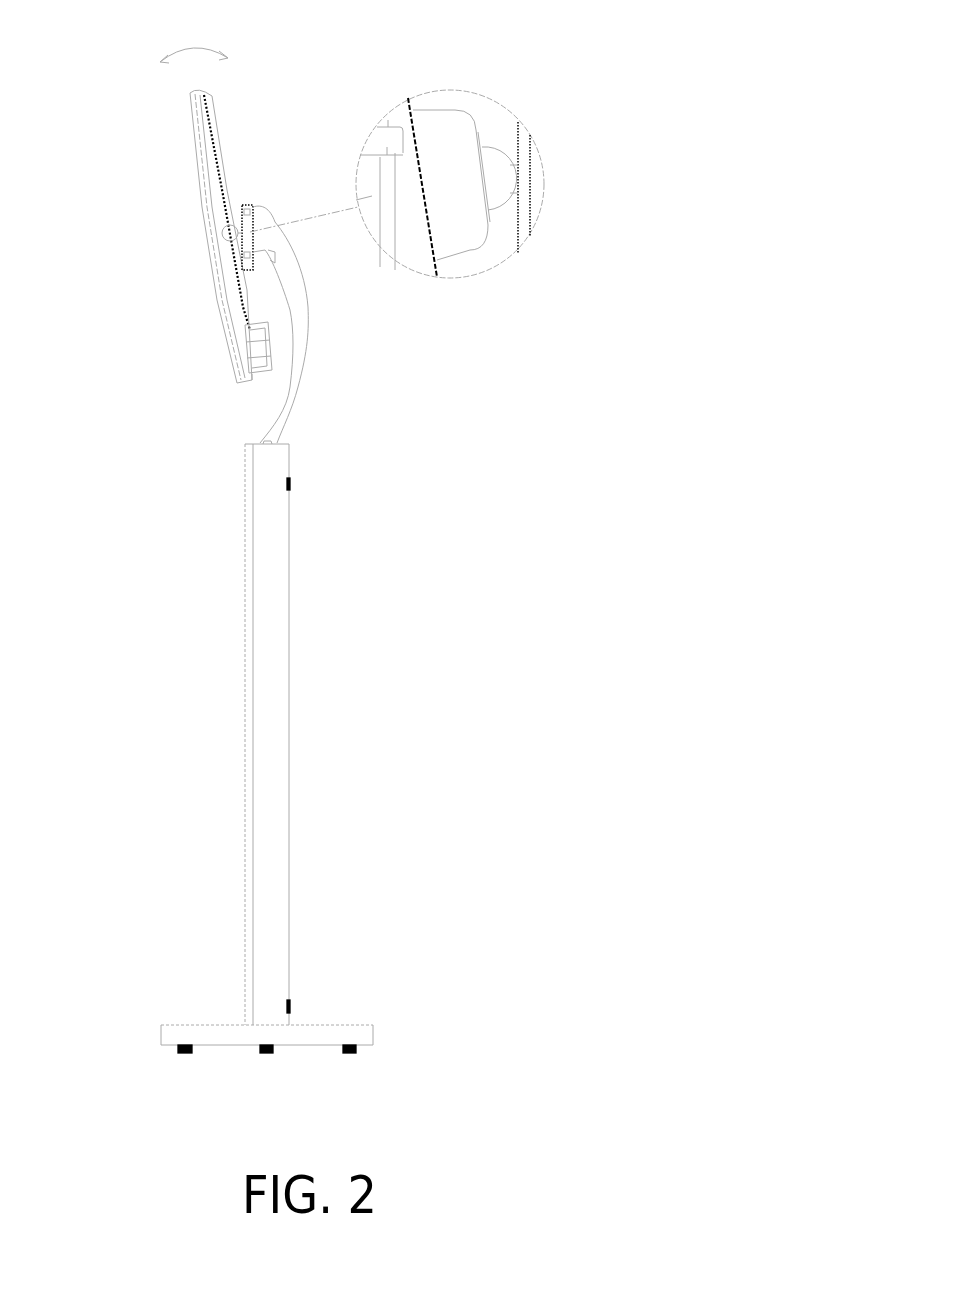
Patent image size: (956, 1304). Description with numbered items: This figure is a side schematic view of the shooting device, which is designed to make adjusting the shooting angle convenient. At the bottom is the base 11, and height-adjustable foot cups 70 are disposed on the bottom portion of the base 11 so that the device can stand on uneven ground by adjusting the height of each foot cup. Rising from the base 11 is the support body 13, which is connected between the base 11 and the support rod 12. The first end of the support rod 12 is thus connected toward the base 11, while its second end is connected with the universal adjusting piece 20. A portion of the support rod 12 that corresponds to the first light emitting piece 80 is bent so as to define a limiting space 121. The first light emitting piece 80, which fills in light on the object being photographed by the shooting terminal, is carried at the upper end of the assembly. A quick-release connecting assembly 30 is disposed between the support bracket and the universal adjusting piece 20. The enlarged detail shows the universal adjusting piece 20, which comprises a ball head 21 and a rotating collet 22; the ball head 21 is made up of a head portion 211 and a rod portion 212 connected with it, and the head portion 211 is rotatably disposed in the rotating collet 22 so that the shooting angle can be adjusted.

The base 11 is at (323, 1030).
The support rod 12 is at (303, 357).
The support body 13 is at (280, 712).
The limiting space 121 is at (283, 317).
The universal adjusting piece 20 is at (571, 147).
The ball head 21 is at (597, 167).
The head portion 211 is at (497, 162).
The rod portion 212 is at (517, 178).
The rotating collet 22 is at (443, 142).
The quick-release connecting assembly 30 is at (250, 205).
The foot cups 70 is at (185, 1053).
The first light emitting piece 80 is at (212, 158).